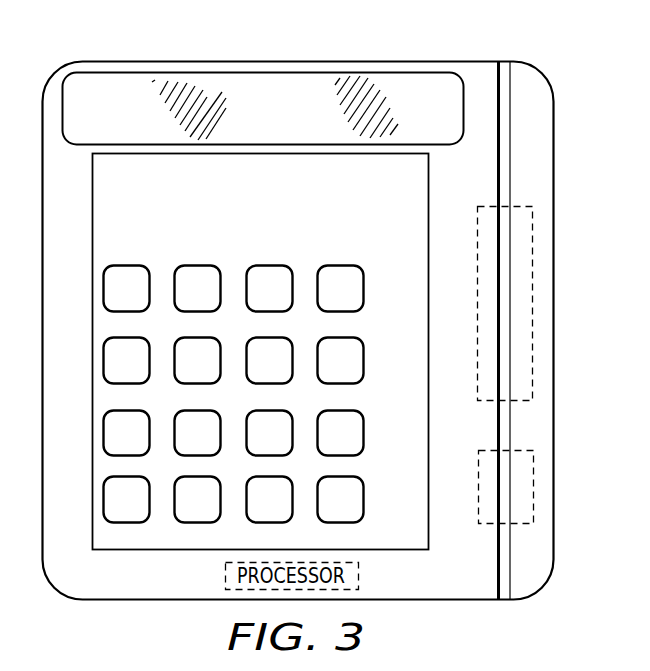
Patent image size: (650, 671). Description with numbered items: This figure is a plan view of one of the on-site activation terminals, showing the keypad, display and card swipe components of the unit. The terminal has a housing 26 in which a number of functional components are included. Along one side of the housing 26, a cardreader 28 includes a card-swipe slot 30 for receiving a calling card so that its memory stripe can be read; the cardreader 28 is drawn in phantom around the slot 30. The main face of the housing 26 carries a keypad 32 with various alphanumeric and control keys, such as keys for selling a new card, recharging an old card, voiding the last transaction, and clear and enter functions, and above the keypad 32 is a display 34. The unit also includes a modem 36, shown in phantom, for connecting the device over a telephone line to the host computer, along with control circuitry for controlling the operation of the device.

The housing 26 is at (555, 325).
The cardreader 28 is at (479, 302).
The card-swipe slot 30 is at (513, 112).
The keypad 32 is at (127, 524).
The display 34 is at (268, 79).
The modem 36 is at (481, 485).